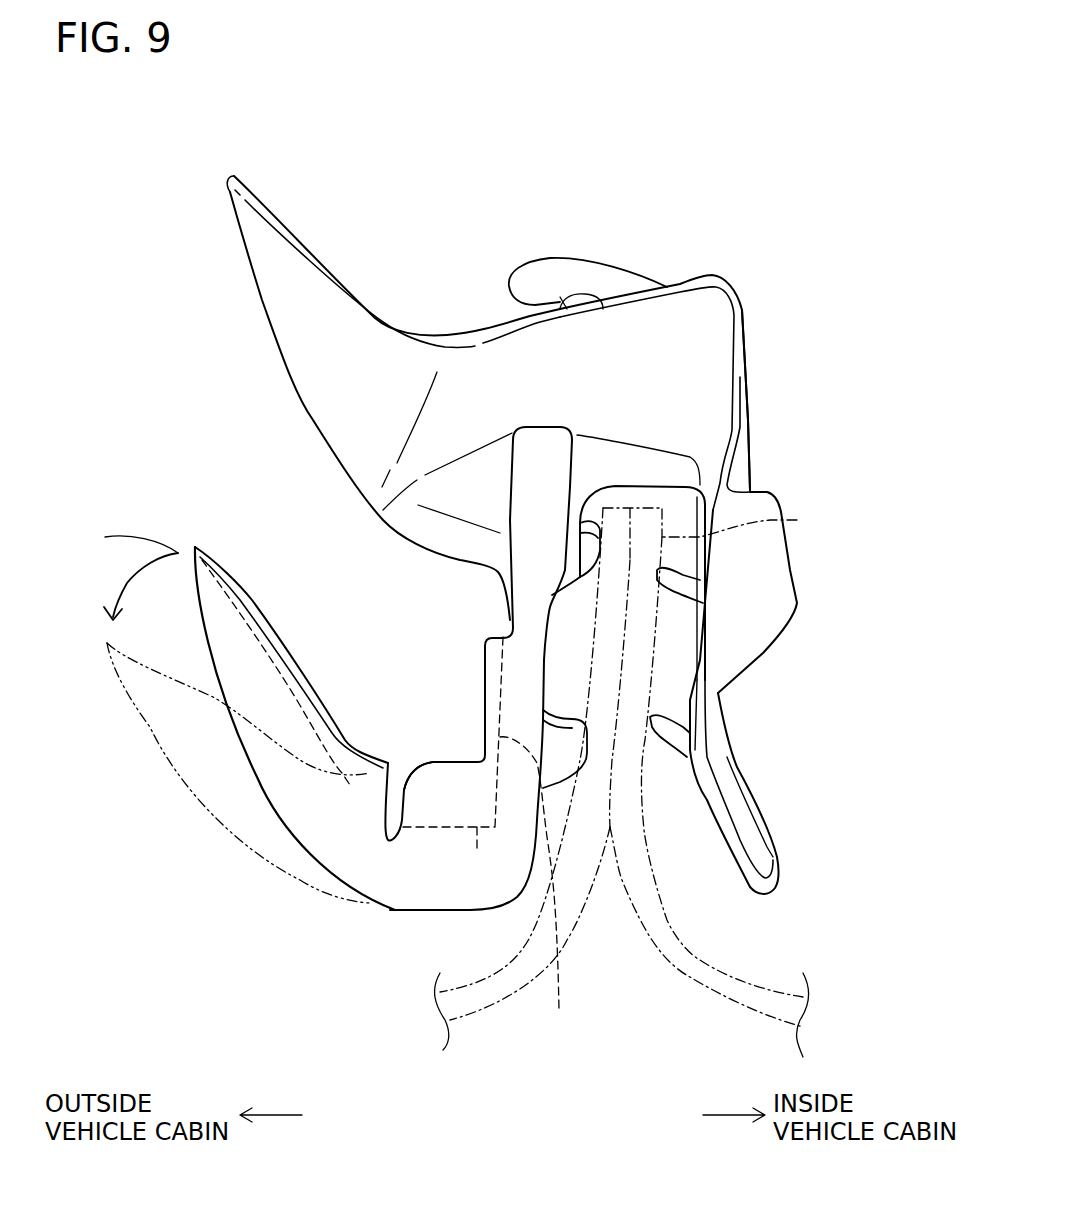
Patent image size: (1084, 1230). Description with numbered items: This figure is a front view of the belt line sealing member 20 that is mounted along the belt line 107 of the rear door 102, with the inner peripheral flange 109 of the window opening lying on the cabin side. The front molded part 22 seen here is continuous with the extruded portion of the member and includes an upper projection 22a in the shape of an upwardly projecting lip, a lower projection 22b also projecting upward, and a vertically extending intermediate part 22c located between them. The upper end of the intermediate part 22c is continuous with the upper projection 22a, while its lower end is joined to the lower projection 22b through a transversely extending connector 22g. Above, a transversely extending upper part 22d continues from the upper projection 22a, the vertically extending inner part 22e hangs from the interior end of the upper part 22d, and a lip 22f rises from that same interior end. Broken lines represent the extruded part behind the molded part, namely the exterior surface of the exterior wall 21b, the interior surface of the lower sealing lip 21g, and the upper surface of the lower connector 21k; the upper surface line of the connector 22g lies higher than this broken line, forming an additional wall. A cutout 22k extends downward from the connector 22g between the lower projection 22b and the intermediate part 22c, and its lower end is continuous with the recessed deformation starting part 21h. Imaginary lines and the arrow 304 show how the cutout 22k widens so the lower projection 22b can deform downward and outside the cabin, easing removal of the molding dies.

The belt line sealing member 20 is at (752, 308).
The front molded part 22 is at (257, 293).
The upper projection 22a is at (287, 253).
The lower projection 22b is at (217, 600).
The intermediate part 22c is at (493, 663).
The upper part 22d is at (613, 383).
The inner part 22e is at (757, 633).
The lip 22f is at (558, 257).
The connector 22g is at (427, 783).
The cutout 22k is at (397, 787).
The exterior wall 21b is at (552, 890).
The lower sealing lip 21g is at (353, 773).
The deformation starting part 21h is at (417, 783).
The lower connector 21k is at (477, 853).
The rear door 102 is at (677, 970).
The belt line 107 is at (662, 537).
The inner peripheral flange 109 is at (729, 528).
The arrow 304 is at (113, 572).